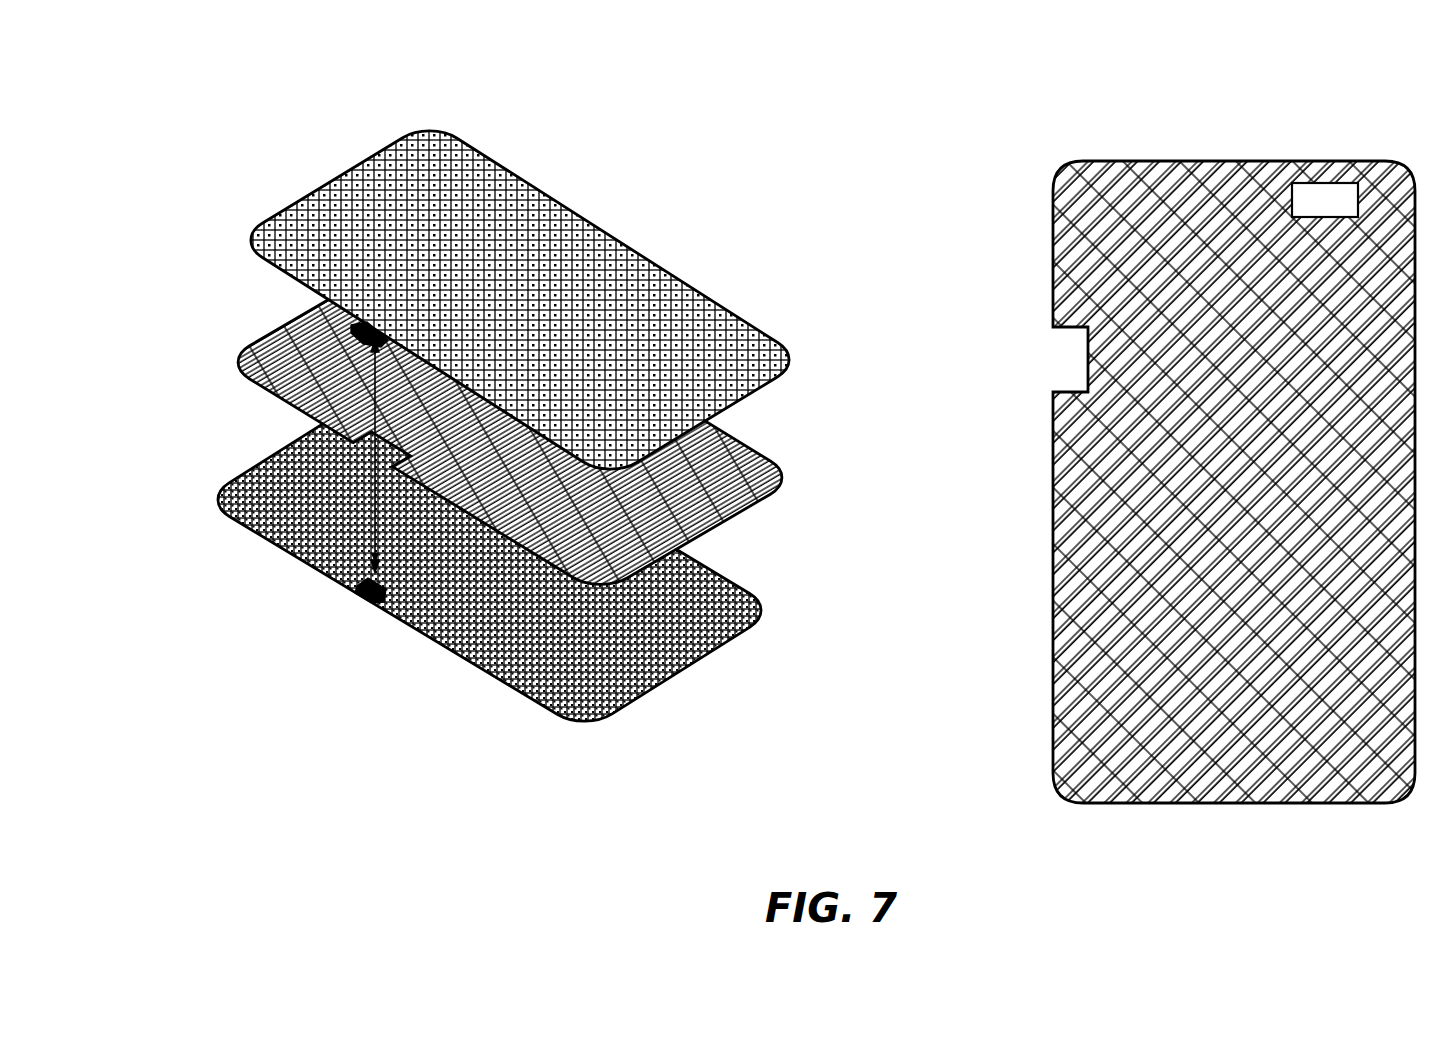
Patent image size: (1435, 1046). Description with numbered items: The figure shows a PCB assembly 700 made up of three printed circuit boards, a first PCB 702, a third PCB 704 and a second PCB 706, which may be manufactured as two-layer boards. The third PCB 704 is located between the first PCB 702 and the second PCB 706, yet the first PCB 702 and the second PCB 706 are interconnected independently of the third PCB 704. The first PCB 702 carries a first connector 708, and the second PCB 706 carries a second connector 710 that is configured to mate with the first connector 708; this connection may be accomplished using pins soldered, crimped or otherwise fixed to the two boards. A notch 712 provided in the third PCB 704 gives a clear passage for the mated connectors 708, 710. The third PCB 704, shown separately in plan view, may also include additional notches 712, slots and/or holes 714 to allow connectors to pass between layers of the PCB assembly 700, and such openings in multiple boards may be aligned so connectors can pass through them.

The PCB assembly 700 is at (188, 40).
The first PCB 702 is at (796, 363).
The third PCB 704 is at (785, 479).
The second PCB 706 is at (764, 609).
The first connector 708 is at (340, 324).
The second connector 710 is at (356, 595).
The notch 712 is at (1069, 354).
The hole 714 is at (1331, 195).